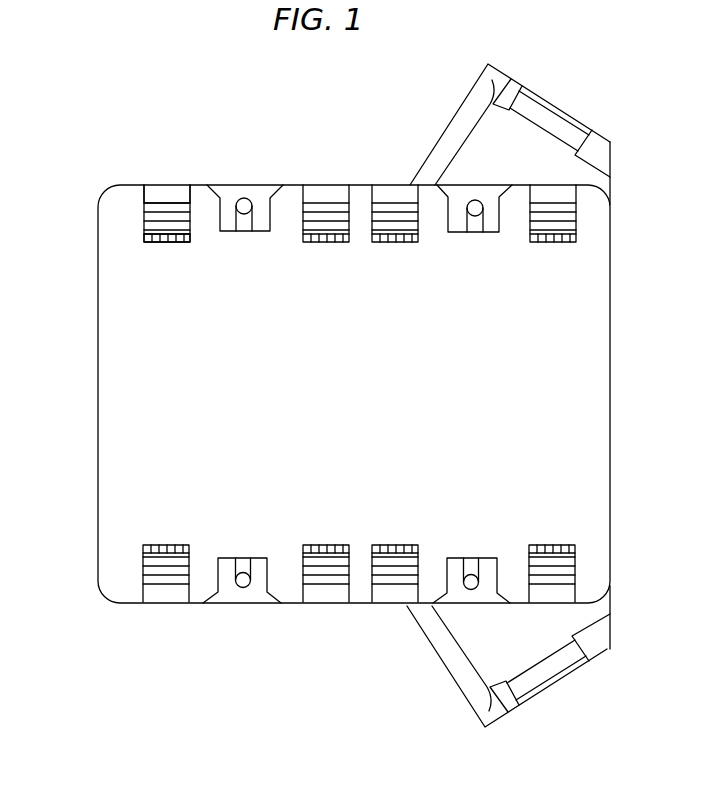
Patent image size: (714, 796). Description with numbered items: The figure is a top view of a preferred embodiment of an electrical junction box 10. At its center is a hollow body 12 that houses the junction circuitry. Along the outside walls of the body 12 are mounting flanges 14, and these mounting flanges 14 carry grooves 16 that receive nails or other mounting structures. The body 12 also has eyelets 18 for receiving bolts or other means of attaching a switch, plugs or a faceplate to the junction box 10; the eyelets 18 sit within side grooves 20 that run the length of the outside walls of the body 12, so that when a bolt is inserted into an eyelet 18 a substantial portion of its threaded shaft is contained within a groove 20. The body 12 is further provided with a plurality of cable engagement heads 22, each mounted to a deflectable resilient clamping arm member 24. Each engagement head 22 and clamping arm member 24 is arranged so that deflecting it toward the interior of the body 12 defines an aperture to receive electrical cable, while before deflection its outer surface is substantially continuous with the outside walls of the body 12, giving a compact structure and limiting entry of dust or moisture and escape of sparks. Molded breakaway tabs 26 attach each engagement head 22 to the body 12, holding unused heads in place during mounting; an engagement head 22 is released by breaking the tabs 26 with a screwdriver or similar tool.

The electrical junction box 10 is at (66, 428).
The central hollow body 12 is at (611, 460).
The mounting flange 14 is at (512, 77).
The groove 16 is at (543, 117).
The eyelet 18 is at (250, 200).
The side groove 20 is at (225, 210).
The cable engagement head 22 is at (152, 202).
The deflectable resilient clamping arm member 24 is at (173, 194).
The molded breakaway tab 26 is at (152, 242).